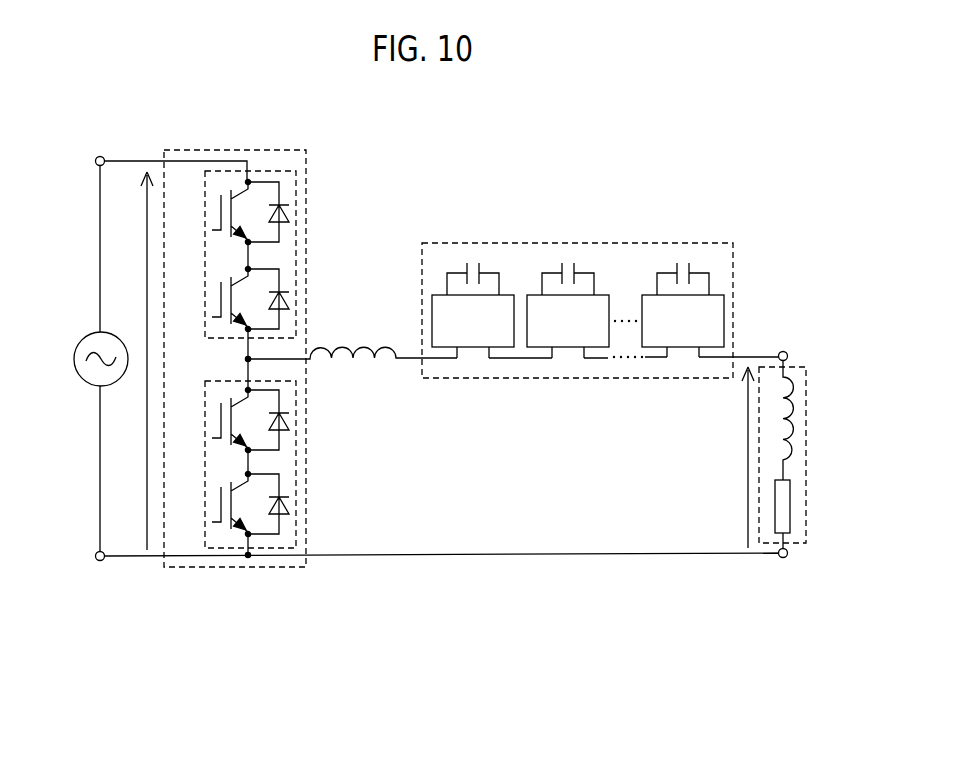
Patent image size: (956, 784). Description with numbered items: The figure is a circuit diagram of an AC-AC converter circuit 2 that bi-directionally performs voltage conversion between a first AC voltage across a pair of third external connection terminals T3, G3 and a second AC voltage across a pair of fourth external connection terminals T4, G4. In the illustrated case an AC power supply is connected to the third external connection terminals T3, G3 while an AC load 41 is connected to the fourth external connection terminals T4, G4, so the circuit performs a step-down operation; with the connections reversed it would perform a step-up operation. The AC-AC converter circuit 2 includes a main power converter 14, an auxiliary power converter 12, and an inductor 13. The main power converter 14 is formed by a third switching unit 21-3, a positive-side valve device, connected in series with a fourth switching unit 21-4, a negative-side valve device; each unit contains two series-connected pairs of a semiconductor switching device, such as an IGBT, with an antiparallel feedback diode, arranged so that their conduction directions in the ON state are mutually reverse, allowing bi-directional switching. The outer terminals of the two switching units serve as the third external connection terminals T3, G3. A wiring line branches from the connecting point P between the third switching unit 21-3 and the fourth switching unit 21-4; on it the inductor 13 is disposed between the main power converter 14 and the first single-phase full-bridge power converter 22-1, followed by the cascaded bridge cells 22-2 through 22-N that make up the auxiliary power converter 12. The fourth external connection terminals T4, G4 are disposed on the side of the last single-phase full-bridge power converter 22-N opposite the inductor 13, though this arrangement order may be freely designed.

The AC-AC converter circuit 2 is at (612, 134).
The auxiliary power converter 12 is at (653, 243).
The inductor 13 is at (383, 345).
The main power converter 14 is at (253, 150).
The third switching unit 21-3 is at (290, 171).
The fourth switching unit 21-4 is at (278, 568).
The single-phase full-bridge power converter 22-1 is at (440, 294).
The single-phase full-bridge power converter 22-2 is at (533, 294).
The single-phase full-bridge power converter 22-N is at (722, 294).
The AC load 41 is at (813, 367).
The third external connection terminal T3 is at (100, 156).
The fourth external connection terminal T4 is at (782, 351).
The third external connection terminal G3 is at (100, 560).
The fourth external connection terminal G4 is at (786, 557).
The connecting point P is at (247, 359).